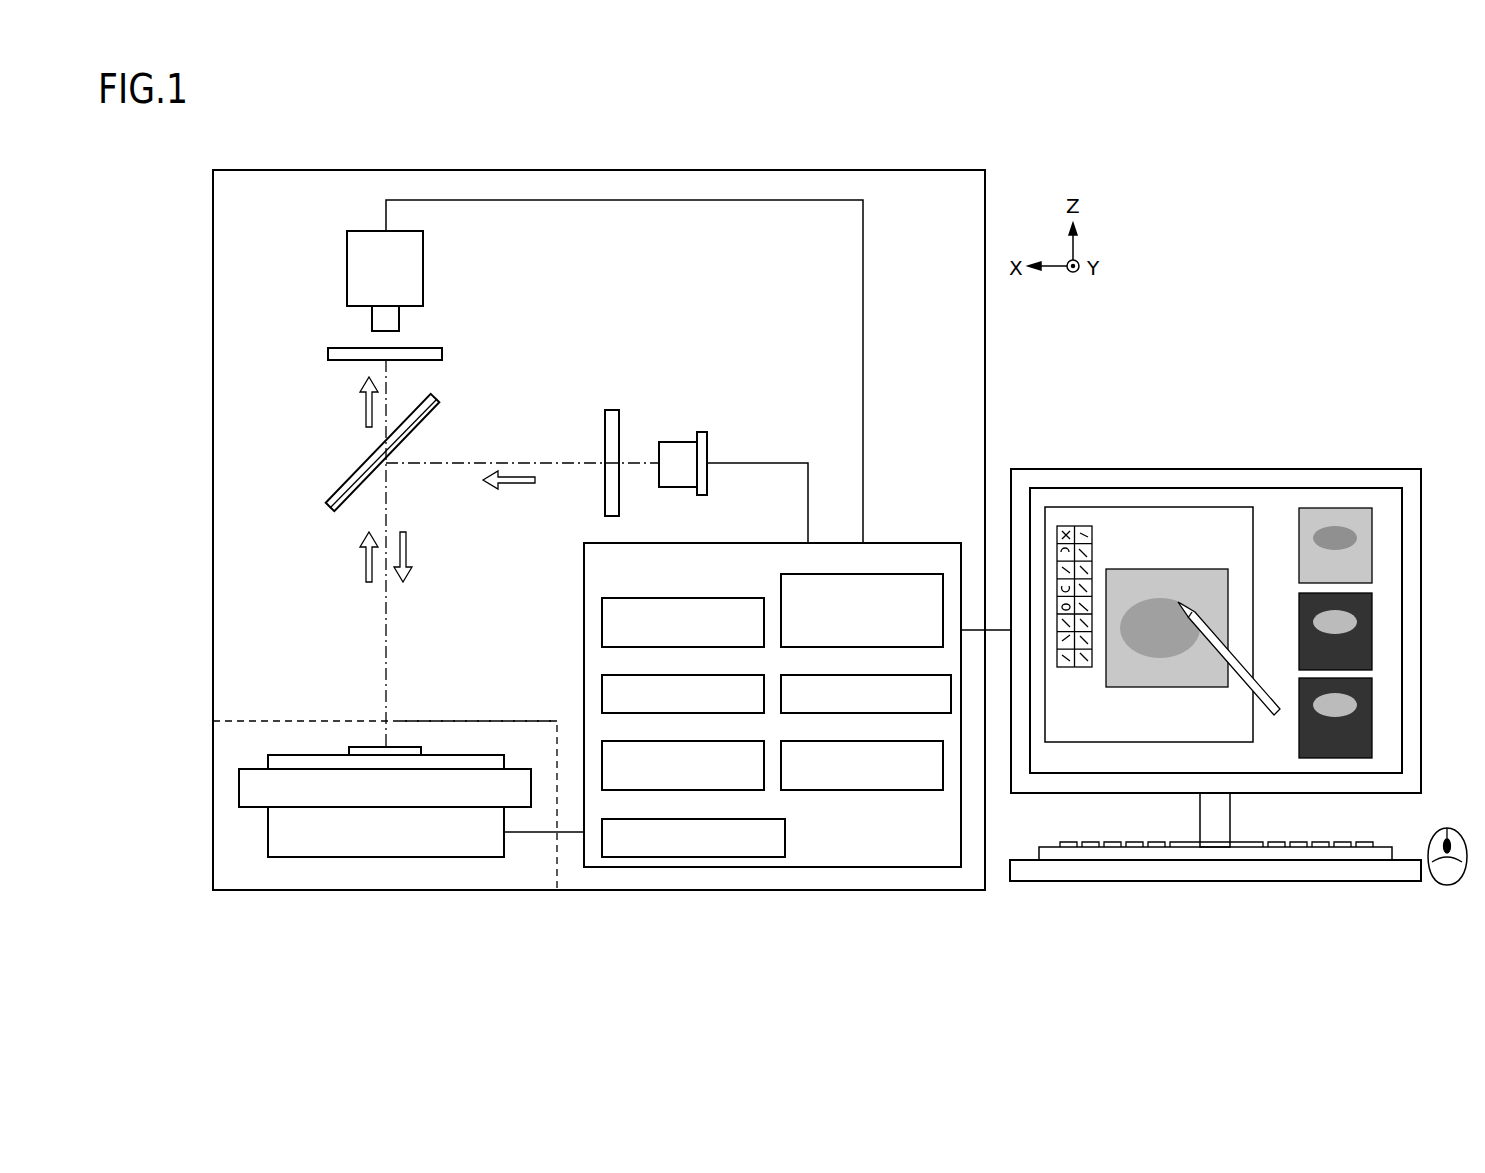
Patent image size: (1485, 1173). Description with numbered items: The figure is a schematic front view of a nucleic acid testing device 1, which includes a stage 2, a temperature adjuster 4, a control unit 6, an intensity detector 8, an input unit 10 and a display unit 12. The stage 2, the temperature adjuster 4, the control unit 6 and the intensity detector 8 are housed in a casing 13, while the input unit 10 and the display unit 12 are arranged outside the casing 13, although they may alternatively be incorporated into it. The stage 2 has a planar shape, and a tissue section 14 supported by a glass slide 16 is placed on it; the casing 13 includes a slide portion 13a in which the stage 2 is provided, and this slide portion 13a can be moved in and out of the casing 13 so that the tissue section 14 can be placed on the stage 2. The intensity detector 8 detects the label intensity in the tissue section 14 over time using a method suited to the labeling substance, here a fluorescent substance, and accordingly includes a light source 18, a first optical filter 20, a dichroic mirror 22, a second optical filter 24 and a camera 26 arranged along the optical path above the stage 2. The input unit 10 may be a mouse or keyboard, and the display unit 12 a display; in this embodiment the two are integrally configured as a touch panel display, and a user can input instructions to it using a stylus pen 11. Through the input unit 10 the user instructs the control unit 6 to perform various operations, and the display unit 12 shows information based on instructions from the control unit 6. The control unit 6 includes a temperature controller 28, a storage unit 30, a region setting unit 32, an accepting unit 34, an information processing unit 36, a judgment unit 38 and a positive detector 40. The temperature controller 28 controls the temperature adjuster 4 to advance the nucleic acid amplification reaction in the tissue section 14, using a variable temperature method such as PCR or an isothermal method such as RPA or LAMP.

The nucleic acid testing device 1 is at (882, 980).
The stage 2 is at (247, 807).
The temperature adjuster 4 is at (326, 857).
The control unit 6 is at (725, 867).
The intensity detector 8 is at (728, 292).
The input unit 10 is at (1386, 850).
The stylus pen 11 is at (1277, 715).
The display unit 12 is at (1368, 469).
The casing 13 is at (562, 890).
The slide portion 13a is at (520, 721).
The tissue section 14 is at (410, 747).
The glass slide 16 is at (297, 755).
The light source 18 is at (678, 442).
The first optical filter 20 is at (612, 410).
The dichroic mirror 22 is at (437, 399).
The second optical filter 24 is at (442, 354).
The camera 26 is at (427, 267).
The temperature controller 28 is at (717, 598).
The storage unit 30 is at (717, 675).
The region setting unit 32 is at (717, 741).
The accepting unit 34 is at (717, 819).
The information processing unit 36 is at (897, 574).
The judgment unit 38 is at (897, 675).
The positive detector 40 is at (897, 741).